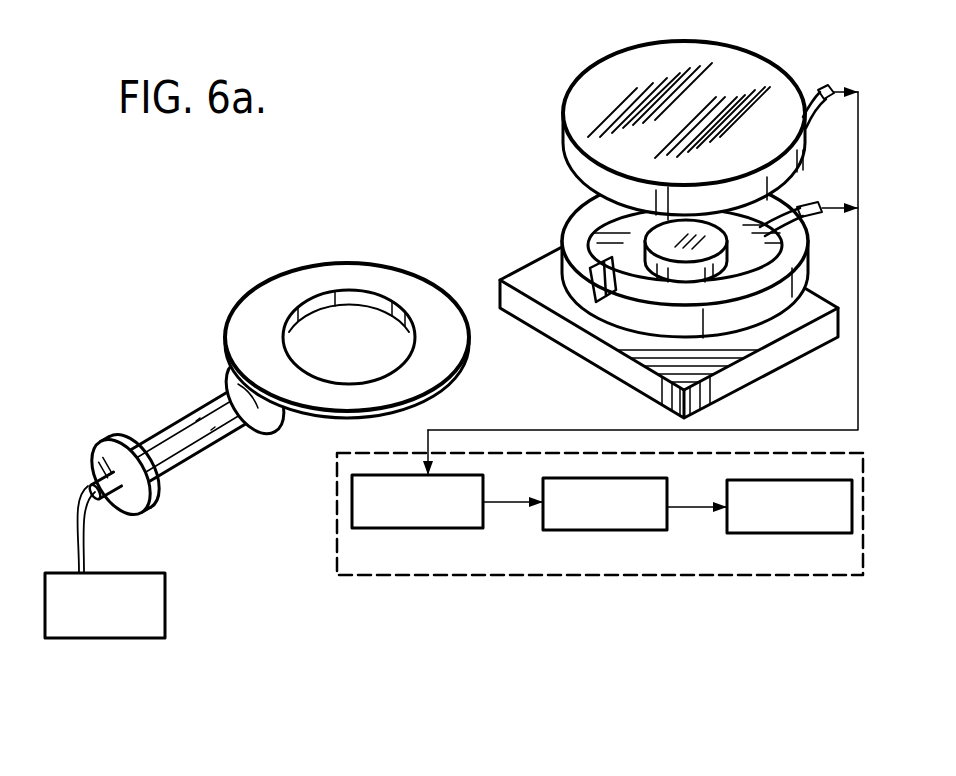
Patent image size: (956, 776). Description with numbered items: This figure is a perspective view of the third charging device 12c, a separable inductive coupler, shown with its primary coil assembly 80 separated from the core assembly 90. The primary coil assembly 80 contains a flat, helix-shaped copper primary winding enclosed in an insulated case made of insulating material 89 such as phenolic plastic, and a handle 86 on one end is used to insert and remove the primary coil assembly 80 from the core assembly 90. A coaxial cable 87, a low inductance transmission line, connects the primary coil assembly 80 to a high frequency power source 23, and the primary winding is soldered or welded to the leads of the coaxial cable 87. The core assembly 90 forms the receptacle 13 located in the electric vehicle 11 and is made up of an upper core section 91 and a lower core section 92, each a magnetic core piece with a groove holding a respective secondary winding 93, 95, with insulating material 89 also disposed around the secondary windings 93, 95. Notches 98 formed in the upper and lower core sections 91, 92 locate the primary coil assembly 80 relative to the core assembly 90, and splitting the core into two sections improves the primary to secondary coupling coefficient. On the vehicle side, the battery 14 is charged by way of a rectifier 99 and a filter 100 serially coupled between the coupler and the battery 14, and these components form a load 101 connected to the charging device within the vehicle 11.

The third charging device 12c is at (273, 358).
The primary coil assembly 80 is at (212, 318).
The insulating material 89 is at (312, 282).
The handle 86 is at (178, 426).
The coaxial cable 87 is at (101, 504).
The power source 23 is at (165, 638).
The core assembly 90 is at (493, 95).
The receptacle 13 is at (795, 43).
The upper core section 91 is at (710, 63).
The lower core section 92 is at (570, 252).
The notches 98 is at (587, 196).
The secondary winding 95 is at (815, 102).
The secondary winding 93 is at (805, 198).
The load 101 is at (322, 516).
The electric vehicle 11 is at (340, 572).
The rectifier 99 is at (485, 528).
The filter 100 is at (667, 532).
The battery 14 is at (727, 491).